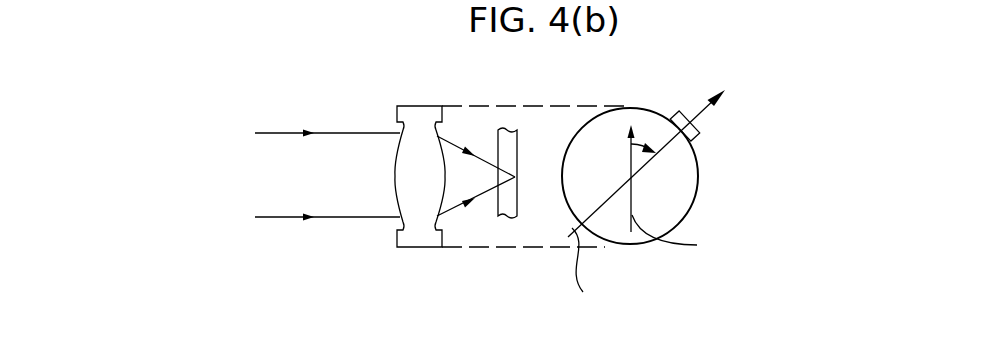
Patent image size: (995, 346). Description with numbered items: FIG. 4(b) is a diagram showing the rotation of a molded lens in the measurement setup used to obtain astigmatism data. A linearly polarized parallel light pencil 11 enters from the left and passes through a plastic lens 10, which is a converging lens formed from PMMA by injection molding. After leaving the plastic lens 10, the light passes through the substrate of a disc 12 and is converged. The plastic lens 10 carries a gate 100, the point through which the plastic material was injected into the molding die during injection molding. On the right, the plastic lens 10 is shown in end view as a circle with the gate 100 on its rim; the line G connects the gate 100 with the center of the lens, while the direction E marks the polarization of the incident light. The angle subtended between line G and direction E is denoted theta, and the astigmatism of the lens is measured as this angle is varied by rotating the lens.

The plastic lens 10 is at (415, 234).
The linearly polarized parallel light pencil 11 is at (273, 218).
The disc 12 is at (510, 156).
The gate 100 is at (682, 110).